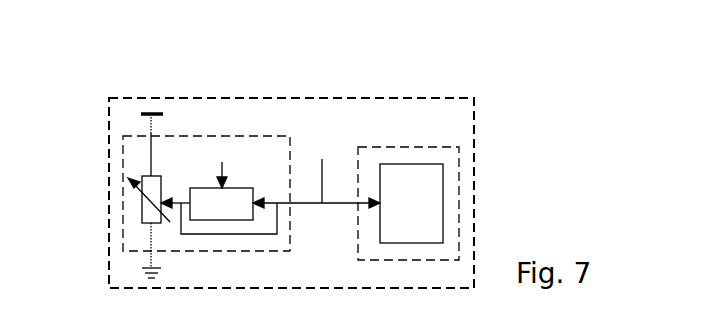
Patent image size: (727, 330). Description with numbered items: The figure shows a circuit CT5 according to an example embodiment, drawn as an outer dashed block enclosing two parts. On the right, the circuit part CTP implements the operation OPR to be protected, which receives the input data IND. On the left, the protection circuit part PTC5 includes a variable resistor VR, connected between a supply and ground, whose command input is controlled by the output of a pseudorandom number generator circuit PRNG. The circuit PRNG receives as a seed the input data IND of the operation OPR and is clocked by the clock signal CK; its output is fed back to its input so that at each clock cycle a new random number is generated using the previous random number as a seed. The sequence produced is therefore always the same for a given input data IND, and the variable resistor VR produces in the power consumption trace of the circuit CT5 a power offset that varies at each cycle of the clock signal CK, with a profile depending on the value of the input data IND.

The circuit CT5 is at (474, 98).
The protection circuit part PTC5 is at (122, 136).
The circuit part CTP is at (459, 147).
The variable resistor VR is at (162, 176).
The clock signal CK is at (221, 165).
The input data IND is at (322, 170).
The pseudorandom number generator circuit PRNG is at (270, 211).
The operation OPR is at (411, 203).